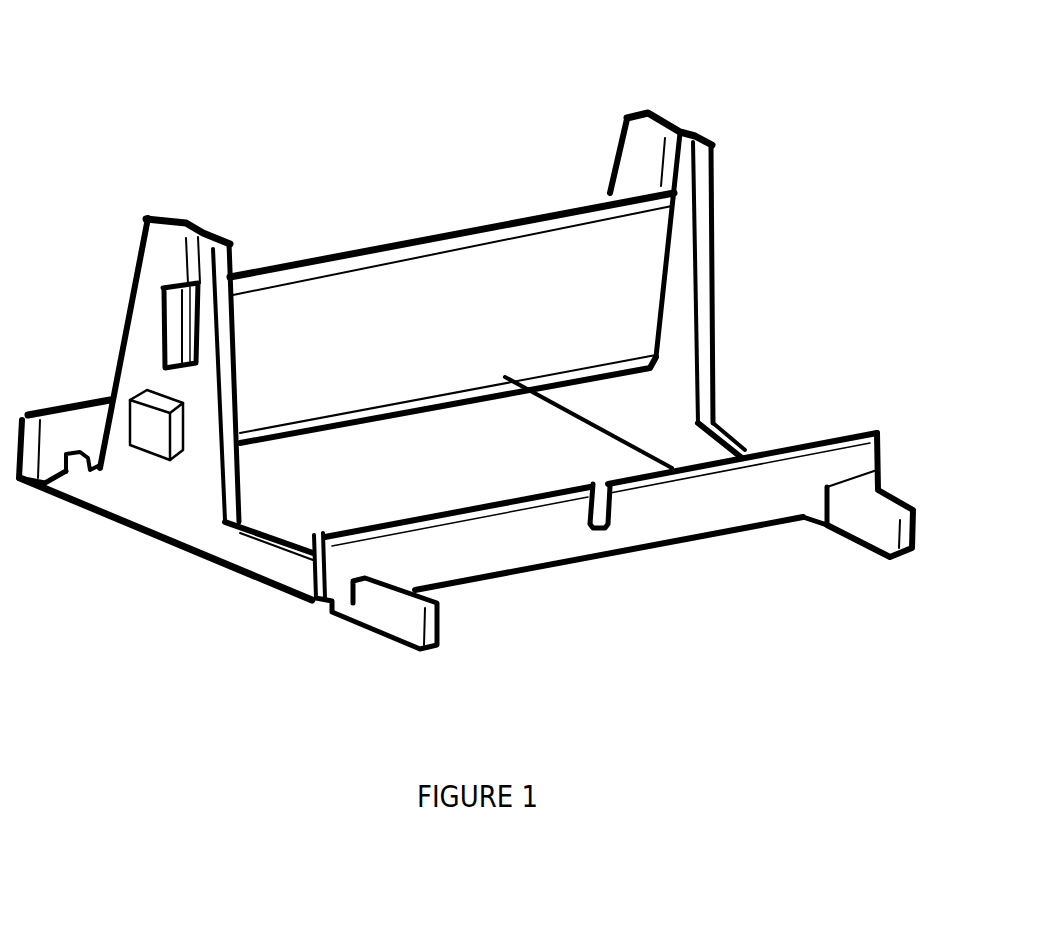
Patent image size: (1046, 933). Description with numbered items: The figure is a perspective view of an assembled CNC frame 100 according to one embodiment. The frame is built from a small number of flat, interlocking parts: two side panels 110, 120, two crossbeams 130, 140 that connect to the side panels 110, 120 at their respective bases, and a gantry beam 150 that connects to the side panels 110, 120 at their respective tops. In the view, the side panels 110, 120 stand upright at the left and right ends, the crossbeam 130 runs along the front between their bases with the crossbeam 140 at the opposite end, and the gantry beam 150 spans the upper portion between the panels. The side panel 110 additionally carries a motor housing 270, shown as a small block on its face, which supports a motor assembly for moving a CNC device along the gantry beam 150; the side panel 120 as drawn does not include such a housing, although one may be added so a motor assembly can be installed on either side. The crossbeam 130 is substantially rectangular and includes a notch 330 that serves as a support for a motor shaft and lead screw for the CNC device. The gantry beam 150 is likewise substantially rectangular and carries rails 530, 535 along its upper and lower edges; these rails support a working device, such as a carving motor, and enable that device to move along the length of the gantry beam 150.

The CNC frame 100 is at (152, 120).
The side panel 110 is at (167, 493).
The side panel 120 is at (678, 318).
The crossbeam 130 is at (682, 512).
The crossbeam 140 is at (57, 428).
The gantry beam 150 is at (505, 308).
The motor housing 270 is at (157, 436).
The notch 330 is at (601, 524).
The rail 530 is at (330, 275).
The rail 535 is at (656, 355).